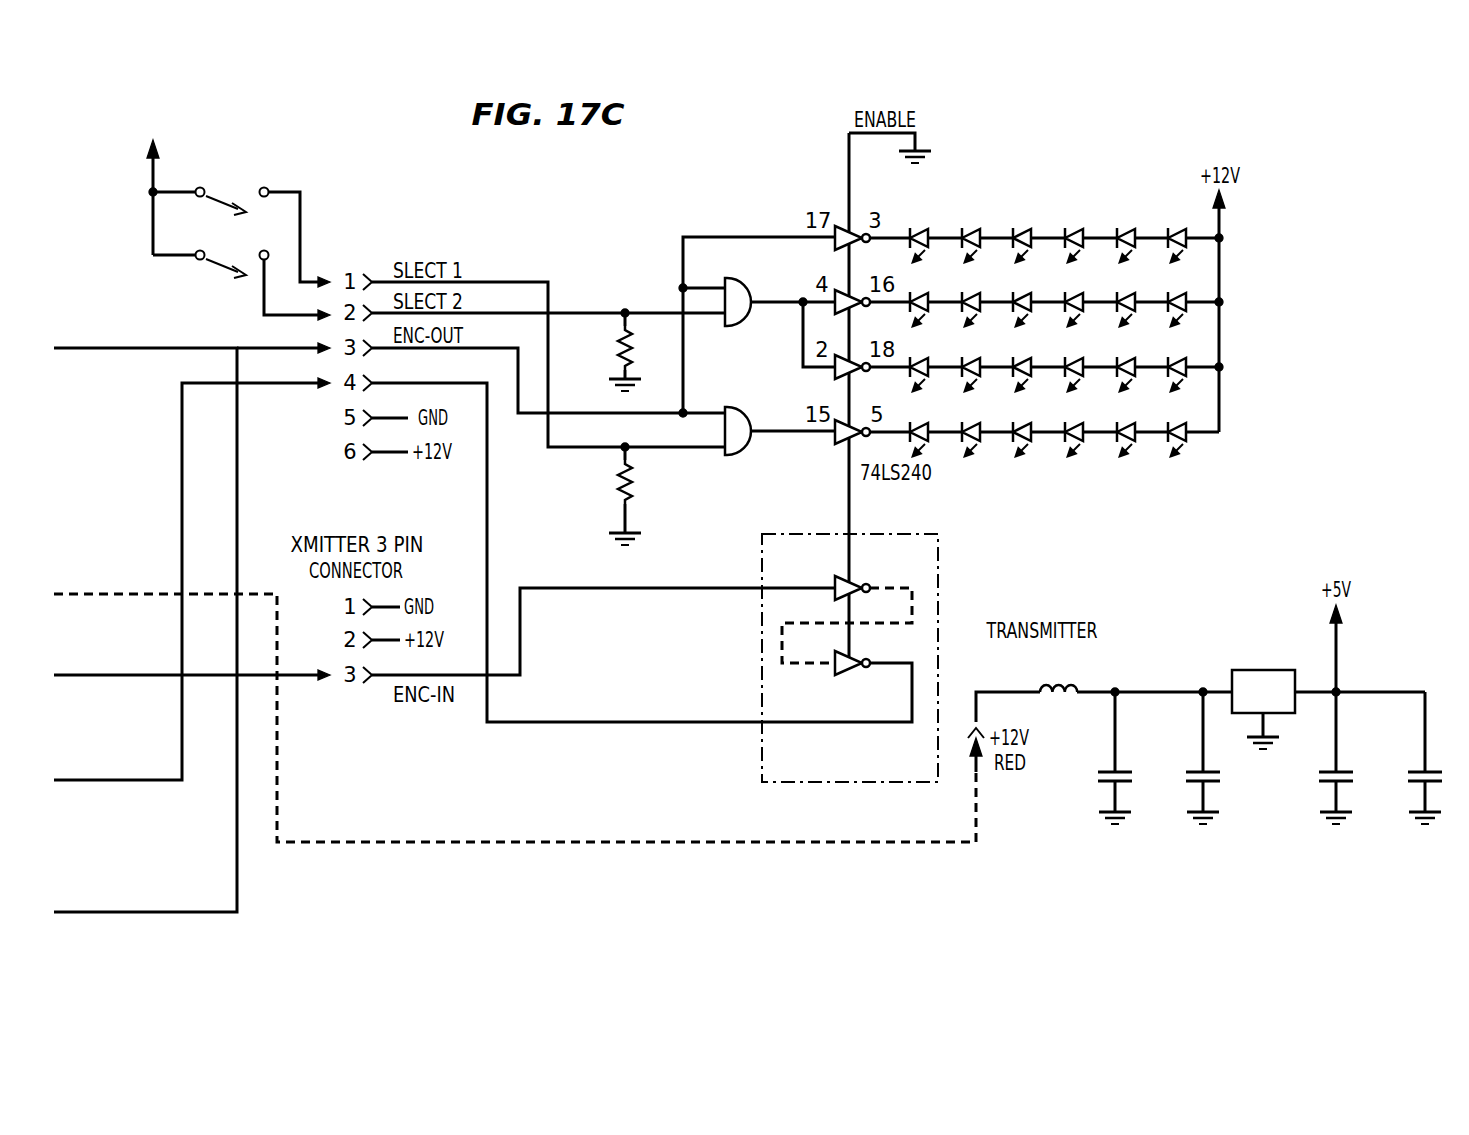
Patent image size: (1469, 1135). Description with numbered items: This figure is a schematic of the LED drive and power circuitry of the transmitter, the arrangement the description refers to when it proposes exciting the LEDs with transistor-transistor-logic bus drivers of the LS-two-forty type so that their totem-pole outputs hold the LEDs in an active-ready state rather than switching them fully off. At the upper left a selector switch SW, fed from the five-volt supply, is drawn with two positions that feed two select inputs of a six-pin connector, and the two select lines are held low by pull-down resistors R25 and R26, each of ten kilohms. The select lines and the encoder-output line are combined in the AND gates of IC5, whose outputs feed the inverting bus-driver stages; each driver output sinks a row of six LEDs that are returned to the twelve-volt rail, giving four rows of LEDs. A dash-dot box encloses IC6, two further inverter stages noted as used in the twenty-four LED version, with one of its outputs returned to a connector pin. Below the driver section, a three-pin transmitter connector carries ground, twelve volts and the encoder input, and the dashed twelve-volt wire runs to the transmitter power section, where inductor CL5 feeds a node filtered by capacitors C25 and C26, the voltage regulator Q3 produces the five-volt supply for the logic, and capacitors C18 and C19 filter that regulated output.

The selector switch SW is at (235, 217).
The 10K pull-down resistor R25 is at (611, 350).
The 10K pull-down resistor R26 is at (611, 494).
The 7408 quad AND gate IC5 is at (757, 359).
The inverter buffer used in 24 LED version IC6 is at (850, 658).
The 1MH inductor CL5 is at (1058, 692).
The 7805 voltage regulator Q3 is at (1263, 697).
The 22UF capacitor C25 is at (1092, 758).
The .01UF capacitor C26 is at (1175, 758).
The 10UF capacitor C18 is at (1314, 758).
The .01UF capacitor C19 is at (1396, 758).